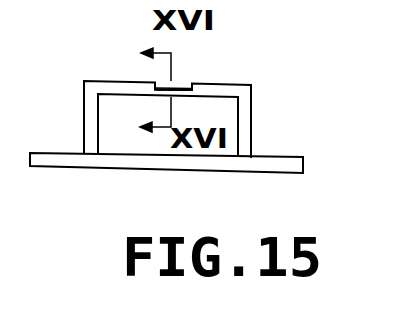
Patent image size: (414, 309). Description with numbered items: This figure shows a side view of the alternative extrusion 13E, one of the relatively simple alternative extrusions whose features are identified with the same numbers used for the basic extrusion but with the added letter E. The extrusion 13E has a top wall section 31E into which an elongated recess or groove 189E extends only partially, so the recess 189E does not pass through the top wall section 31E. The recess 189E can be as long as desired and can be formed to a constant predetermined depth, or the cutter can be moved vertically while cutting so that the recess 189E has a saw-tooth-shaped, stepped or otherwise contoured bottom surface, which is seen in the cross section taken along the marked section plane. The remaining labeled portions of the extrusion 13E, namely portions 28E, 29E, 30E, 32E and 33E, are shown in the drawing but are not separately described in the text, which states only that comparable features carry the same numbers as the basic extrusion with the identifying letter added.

The extrusion 13E is at (223, 38).
The housing 28E is at (82, 113).
The inner box / cavity 29E is at (253, 118).
The base plate 30E is at (193, 170).
The top wall section 31E is at (118, 81).
The right flange end 32E is at (275, 174).
The left flange end 33E is at (57, 168).
The recess or groove 189E is at (180, 86).